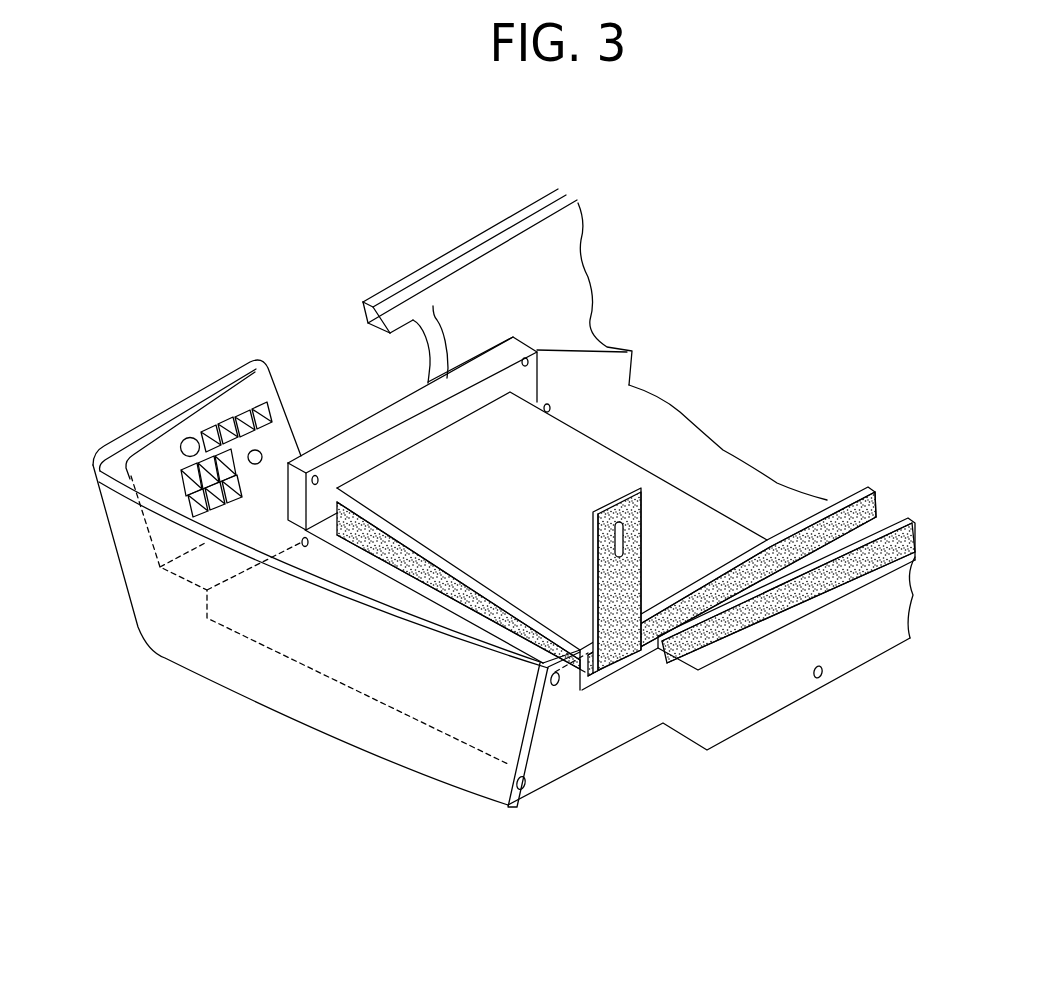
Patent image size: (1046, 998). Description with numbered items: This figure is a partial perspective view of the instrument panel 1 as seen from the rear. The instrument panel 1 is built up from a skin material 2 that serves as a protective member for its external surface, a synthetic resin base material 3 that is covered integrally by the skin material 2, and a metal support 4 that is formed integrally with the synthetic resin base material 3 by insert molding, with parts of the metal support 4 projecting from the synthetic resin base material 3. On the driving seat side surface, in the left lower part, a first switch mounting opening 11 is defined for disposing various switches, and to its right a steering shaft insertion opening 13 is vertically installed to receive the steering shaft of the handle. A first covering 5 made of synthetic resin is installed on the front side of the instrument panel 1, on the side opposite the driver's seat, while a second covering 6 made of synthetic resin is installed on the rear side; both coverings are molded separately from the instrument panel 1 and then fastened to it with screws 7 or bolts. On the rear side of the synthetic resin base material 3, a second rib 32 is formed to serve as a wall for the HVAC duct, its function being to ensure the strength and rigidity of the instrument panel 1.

The instrument panel 1 is at (142, 665).
The skin material 2 is at (100, 447).
The synthetic resin base material 3 is at (261, 373).
The metal support 4 is at (870, 507).
The first covering 5 is at (610, 742).
The second covering 6 is at (497, 334).
The screws 7 is at (549, 406).
The first switch mounting opening 11 is at (166, 460).
The steering shaft insertion opening 13 is at (313, 367).
The second rib 32 is at (276, 527).